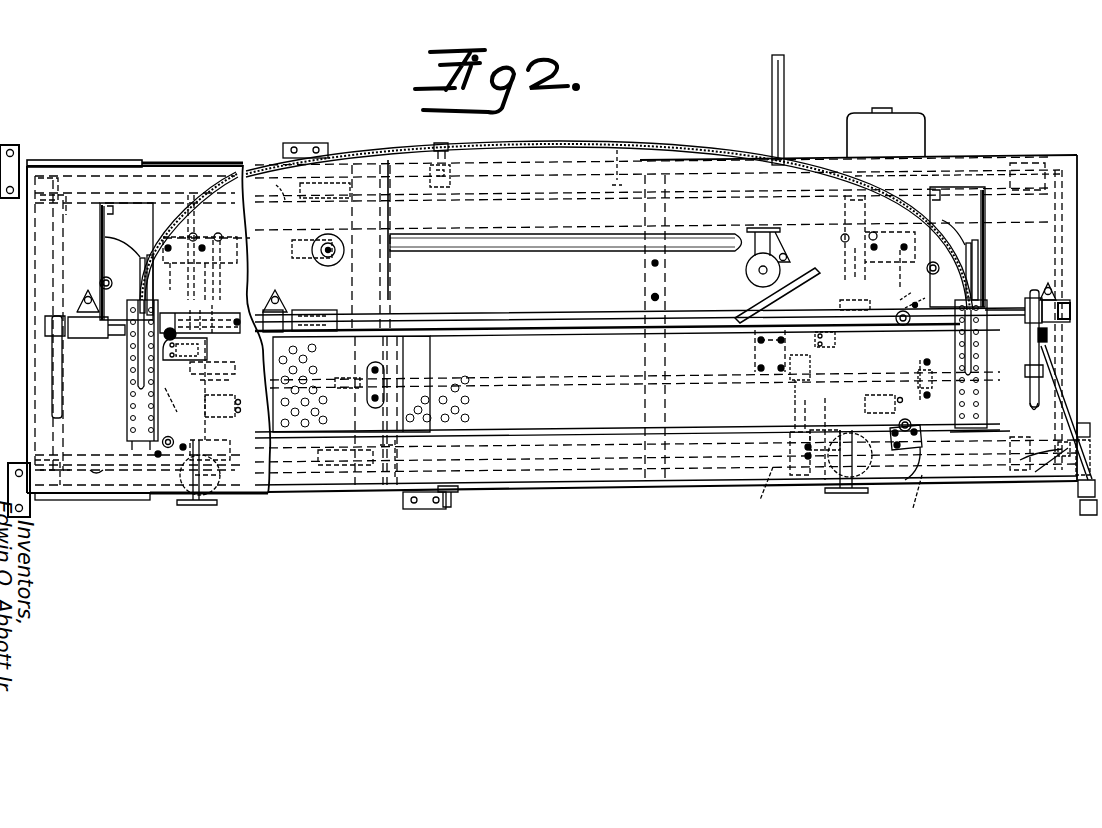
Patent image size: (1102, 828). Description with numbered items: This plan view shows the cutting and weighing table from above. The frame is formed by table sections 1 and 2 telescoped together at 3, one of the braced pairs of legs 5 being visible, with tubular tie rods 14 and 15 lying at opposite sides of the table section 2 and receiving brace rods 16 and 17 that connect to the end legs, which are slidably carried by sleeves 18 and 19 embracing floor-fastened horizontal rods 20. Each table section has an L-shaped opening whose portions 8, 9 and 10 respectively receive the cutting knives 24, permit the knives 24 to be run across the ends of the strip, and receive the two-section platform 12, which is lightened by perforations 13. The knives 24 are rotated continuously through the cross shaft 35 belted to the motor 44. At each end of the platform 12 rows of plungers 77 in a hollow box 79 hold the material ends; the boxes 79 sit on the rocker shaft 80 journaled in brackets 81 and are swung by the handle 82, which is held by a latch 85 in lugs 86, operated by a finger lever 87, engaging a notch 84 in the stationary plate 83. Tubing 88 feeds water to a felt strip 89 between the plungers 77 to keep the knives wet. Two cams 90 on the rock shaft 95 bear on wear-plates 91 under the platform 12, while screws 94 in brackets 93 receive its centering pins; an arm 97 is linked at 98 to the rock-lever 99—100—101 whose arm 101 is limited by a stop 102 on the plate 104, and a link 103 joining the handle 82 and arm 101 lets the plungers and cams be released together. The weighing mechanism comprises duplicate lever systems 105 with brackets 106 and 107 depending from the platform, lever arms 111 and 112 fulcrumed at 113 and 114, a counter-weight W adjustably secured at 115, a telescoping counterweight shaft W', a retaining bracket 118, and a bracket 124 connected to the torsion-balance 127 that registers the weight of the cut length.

The table section 1 is at (228, 160).
The table section 2 is at (508, 165).
The telescoped joint 3 is at (386, 490).
The legs 5 is at (458, 175).
The opening portion 8 is at (135, 205).
The opening portion 9 is at (141, 449).
The opening portion 10 is at (478, 330).
The platform 12 is at (715, 371).
The perforations 13 is at (325, 420).
The tubular tie rod 14 is at (609, 481).
The tubular tie rod 15 is at (628, 140).
The brace rod 16 is at (98, 453).
The brace rod 17 is at (988, 388).
The sleeve 18 is at (70, 500).
The sleeve 19 is at (70, 162).
The horizontal rods 20 is at (198, 162).
The cutting knives 24 is at (138, 256).
The cross shaft 35 is at (772, 92).
The motor 44 is at (886, 132).
The plungers 77 is at (128, 420).
The hollow box 79 is at (127, 398).
The rocker shaft 80 is at (1012, 314).
The brackets 81 is at (82, 302).
The operating handle 82 is at (62, 385).
The stationary plate 83 is at (1028, 304).
The notch 84 is at (1072, 312).
The spring pressed latch 85 is at (1050, 334).
The lugs 86 is at (1050, 356).
The finger lever 87 is at (1036, 399).
The tubing 88 is at (372, 148).
The strip of felt 89 is at (586, 326).
The cams 90 is at (940, 378).
The wear-plates 91 is at (388, 372).
The brackets 93 is at (172, 328).
The screws 94 is at (160, 470).
The rock shaft 95 is at (635, 370).
The arm 97 is at (816, 339).
The link 98 is at (795, 395).
The rock-lever 99 is at (764, 492).
The fulcrum 100 is at (922, 499).
The rock-lever arm 101 is at (800, 478).
The stop 102 is at (1083, 423).
The link 103 is at (1040, 470).
The plate 104 is at (1036, 452).
The system of levers 105 is at (880, 284).
The bracket 106 is at (246, 419).
The bracket 107 is at (814, 377).
The lever arm 111 is at (824, 437).
The lever arm 112 is at (212, 369).
The fulcrum 113 is at (224, 446).
The fulcrum 114 is at (905, 299).
The adjustable securing means 115 is at (196, 507).
The bracket 118 is at (903, 232).
The bracket 124 is at (755, 352).
The torsion-balance 127 is at (806, 276).
The counter-weight W is at (527, 506).
The counterweight W' is at (517, 252).